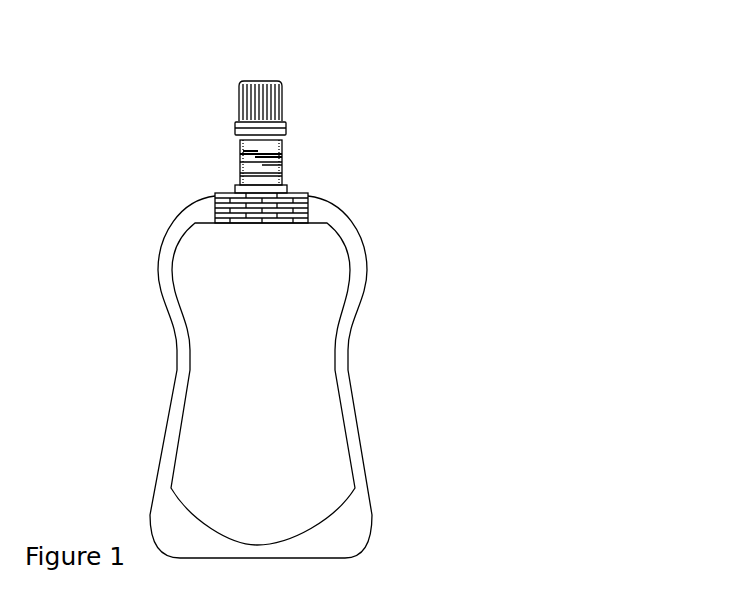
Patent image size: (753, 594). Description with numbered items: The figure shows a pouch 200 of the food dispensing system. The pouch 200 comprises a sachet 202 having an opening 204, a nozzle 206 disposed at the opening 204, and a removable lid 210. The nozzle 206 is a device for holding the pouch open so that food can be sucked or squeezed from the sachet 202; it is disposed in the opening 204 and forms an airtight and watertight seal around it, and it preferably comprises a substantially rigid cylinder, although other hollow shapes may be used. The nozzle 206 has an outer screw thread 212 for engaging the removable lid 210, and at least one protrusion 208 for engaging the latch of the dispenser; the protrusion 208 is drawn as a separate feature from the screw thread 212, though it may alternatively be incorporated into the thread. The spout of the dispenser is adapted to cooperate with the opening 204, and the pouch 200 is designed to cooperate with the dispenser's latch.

The pouch 200 is at (150, 340).
The sachet 202 is at (342, 348).
The opening 204 is at (270, 222).
The nozzle 206 is at (282, 142).
The protrusion 208 is at (240, 175).
The removable lid 210 is at (283, 113).
The outer screw thread 212 is at (240, 155).